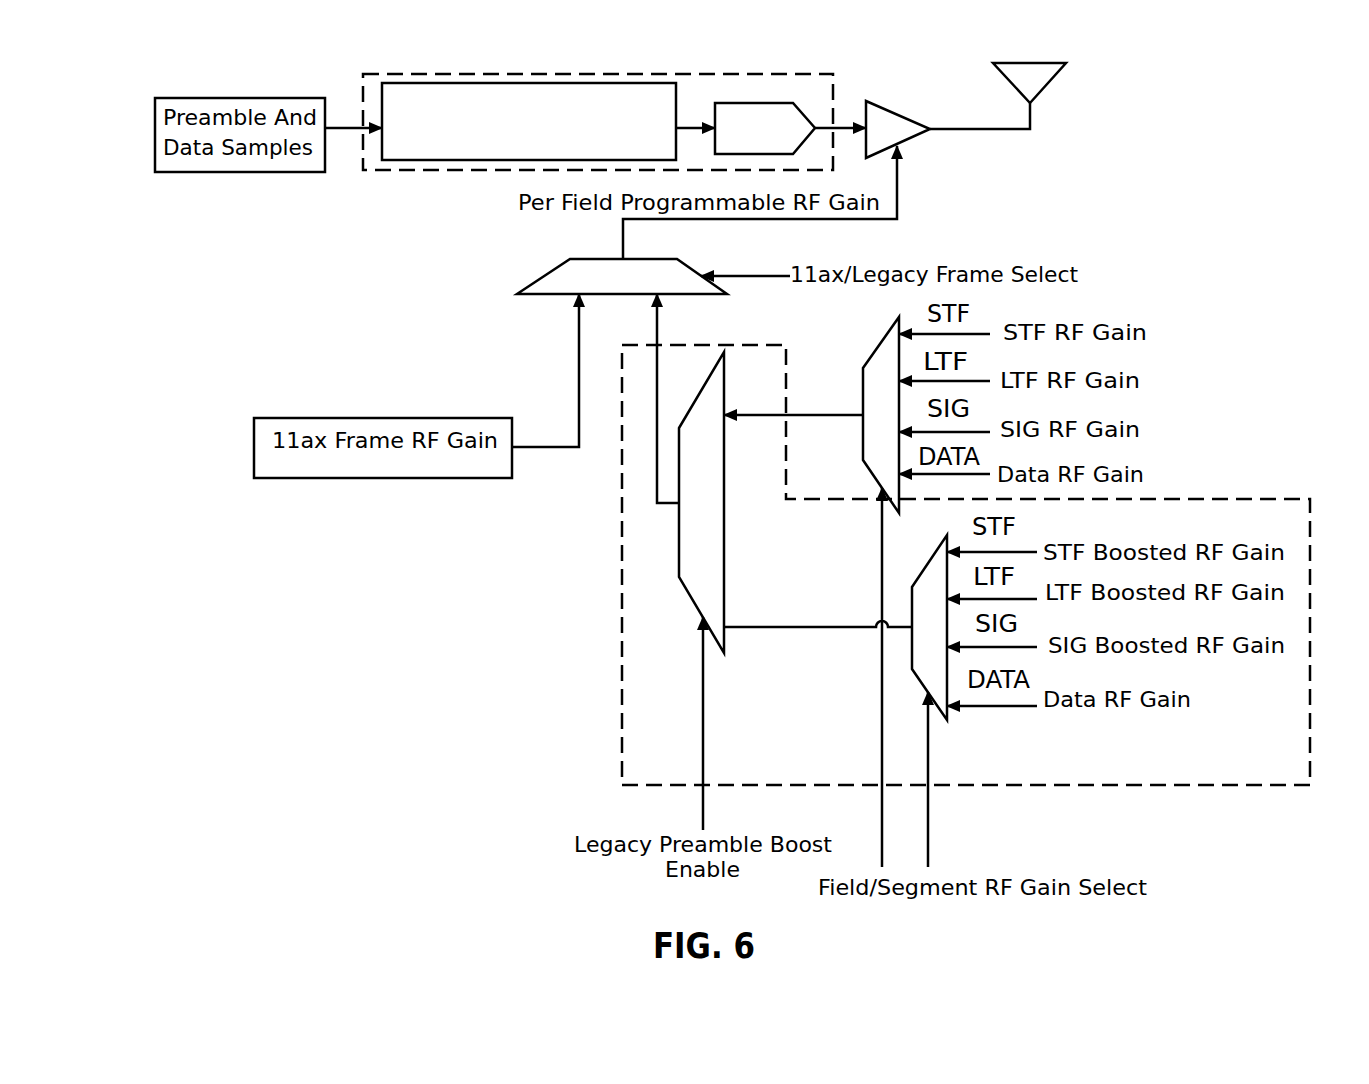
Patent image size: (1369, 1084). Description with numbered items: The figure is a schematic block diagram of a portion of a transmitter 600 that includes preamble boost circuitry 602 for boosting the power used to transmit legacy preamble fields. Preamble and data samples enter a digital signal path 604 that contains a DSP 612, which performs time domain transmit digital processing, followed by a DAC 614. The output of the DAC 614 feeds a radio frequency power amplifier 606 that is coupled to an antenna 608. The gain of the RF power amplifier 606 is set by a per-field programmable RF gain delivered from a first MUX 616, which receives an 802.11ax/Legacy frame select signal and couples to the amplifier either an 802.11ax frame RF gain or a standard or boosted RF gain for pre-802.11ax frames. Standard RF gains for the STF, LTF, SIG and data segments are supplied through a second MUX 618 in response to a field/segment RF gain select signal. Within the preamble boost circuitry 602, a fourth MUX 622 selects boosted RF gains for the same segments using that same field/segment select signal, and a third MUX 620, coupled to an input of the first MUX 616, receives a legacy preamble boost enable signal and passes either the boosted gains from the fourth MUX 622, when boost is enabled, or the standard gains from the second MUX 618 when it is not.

The transmitter 600 is at (133, 63).
The preamble boost circuitry 602 is at (676, 764).
The digital signal path 604 is at (365, 172).
The RF power amplifier 606 is at (892, 116).
The antenna 608 is at (1062, 66).
The DSP 612 is at (470, 162).
The DAC 614 is at (751, 102).
The first MUX 616 is at (528, 285).
The second MUX 618 is at (864, 354).
The third MUX 620 is at (724, 538).
The fourth MUX 622 is at (918, 567).